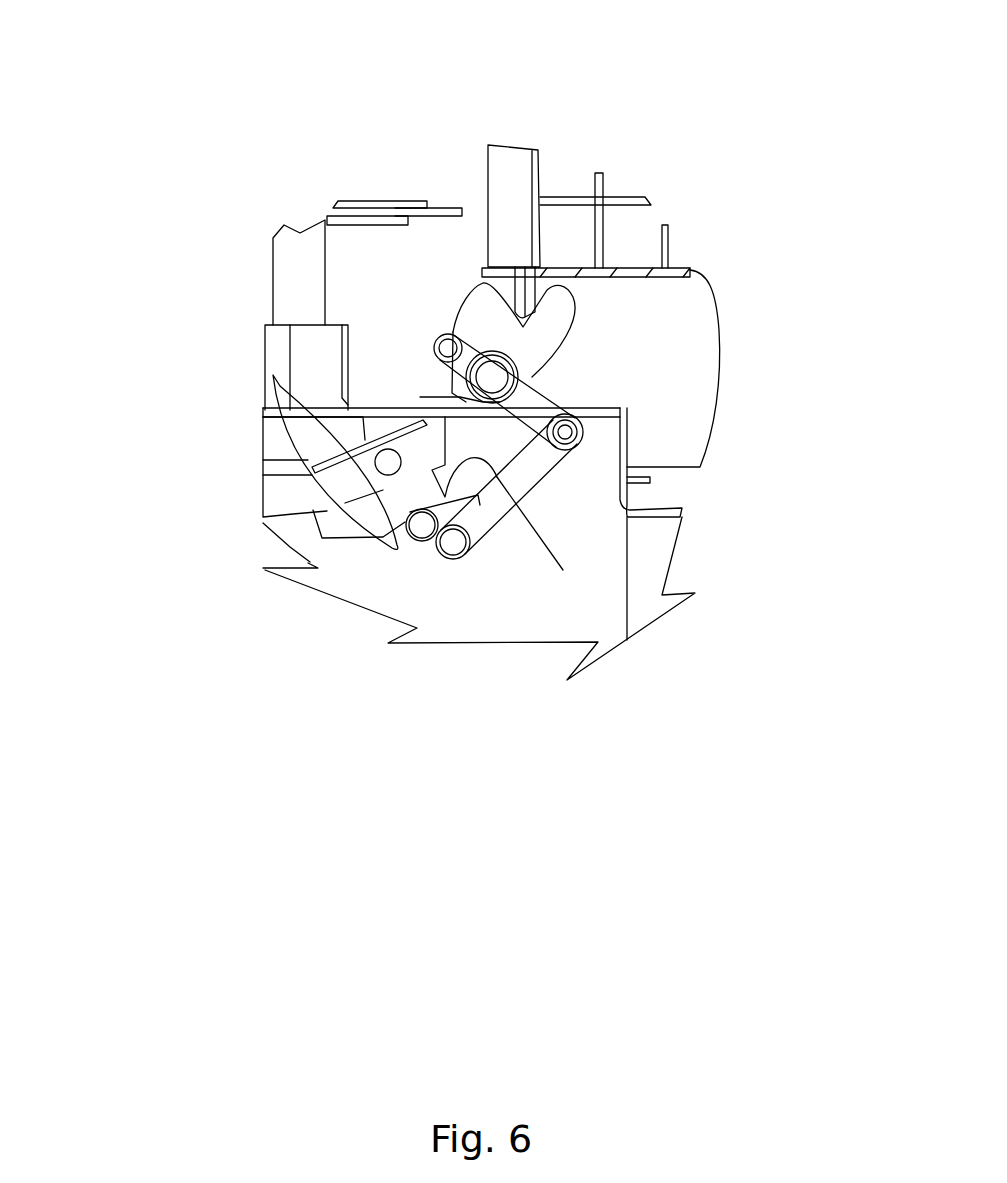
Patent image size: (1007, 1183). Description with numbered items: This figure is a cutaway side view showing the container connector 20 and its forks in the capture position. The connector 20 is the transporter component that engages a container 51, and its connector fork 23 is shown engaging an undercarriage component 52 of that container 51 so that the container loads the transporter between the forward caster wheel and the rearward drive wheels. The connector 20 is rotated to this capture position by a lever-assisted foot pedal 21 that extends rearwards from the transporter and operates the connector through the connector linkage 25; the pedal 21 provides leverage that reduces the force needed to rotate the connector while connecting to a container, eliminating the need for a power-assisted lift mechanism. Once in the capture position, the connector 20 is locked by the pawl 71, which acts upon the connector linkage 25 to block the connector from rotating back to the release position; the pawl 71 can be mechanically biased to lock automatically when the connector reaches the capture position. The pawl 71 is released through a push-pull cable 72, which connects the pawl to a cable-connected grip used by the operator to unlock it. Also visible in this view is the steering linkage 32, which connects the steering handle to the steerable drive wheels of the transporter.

The container connector 20 is at (604, 322).
The lever-assisted foot pedal 21 is at (293, 515).
The connector fork 23 is at (566, 338).
The connector linkage 25 is at (545, 482).
The steering linkage 32 is at (363, 197).
The container 51 is at (488, 180).
The undercarriage component 52 is at (490, 283).
The pawl 71 is at (513, 512).
The push-pull cable 72 is at (362, 540).